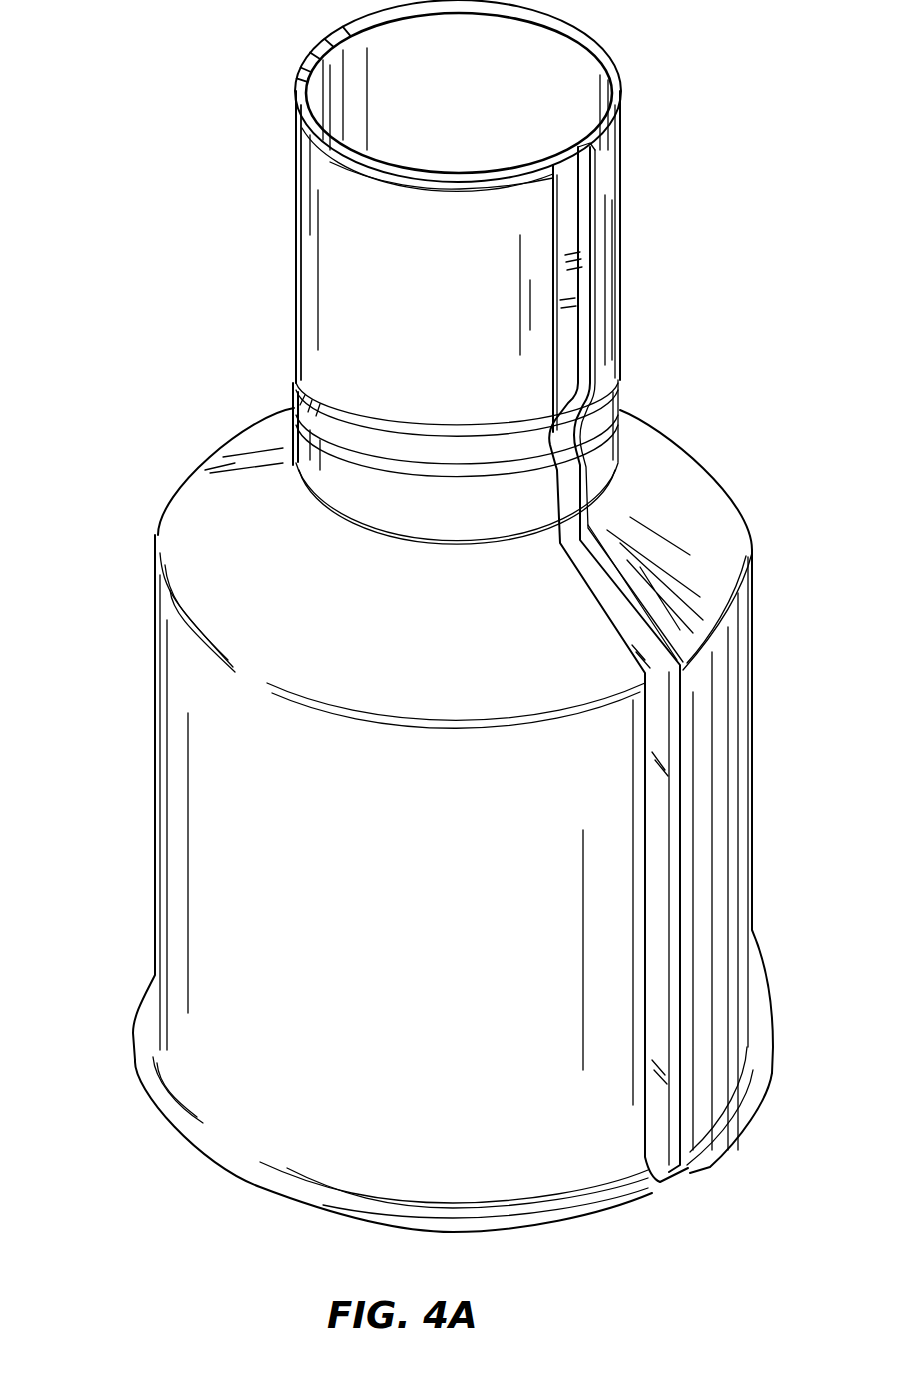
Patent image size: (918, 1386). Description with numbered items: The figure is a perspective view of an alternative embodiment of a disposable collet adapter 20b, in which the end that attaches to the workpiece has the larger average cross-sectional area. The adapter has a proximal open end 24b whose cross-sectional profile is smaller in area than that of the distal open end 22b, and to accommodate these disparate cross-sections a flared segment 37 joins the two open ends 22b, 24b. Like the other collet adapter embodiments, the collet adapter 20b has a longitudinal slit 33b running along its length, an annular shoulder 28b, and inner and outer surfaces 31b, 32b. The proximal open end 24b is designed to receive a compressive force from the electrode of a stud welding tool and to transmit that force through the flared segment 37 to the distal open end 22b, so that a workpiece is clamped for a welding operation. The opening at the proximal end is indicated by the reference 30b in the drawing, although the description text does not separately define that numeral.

The disposable collet adapter 20b is at (414, 616).
The distal open end 22b is at (210, 823).
The proximal open end 24b is at (337, 322).
The annular shoulder 28b is at (297, 392).
The opening 30b is at (533, 96).
The inner surface 31b is at (352, 243).
The outer surface 32b is at (383, 88).
The longitudinal slit 33b is at (668, 1166).
The flared segment 37 is at (688, 508).